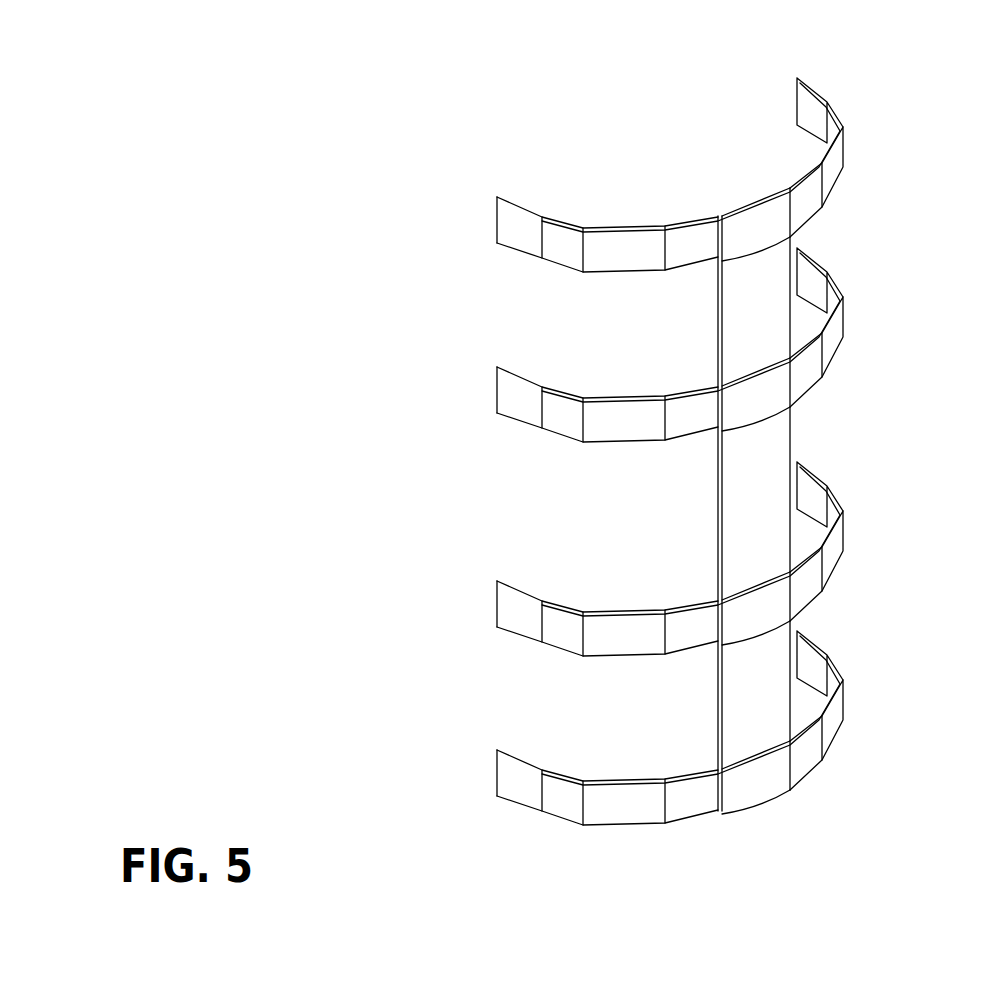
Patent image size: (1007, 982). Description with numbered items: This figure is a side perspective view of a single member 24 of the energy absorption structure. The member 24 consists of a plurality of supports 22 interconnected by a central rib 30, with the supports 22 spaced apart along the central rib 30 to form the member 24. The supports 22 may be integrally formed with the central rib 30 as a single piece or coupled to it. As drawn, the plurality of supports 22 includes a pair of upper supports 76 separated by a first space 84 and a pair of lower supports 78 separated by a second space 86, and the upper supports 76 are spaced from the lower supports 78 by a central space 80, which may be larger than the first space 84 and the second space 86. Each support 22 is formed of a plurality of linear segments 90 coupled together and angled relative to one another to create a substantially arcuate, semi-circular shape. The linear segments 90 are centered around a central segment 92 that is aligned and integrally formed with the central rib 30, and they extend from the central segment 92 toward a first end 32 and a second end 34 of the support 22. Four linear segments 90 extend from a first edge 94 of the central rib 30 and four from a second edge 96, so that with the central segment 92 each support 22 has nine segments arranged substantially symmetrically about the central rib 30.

The support 22 is at (565, 252).
The member 24 is at (503, 97).
The central rib 30 is at (768, 447).
The first end 32 is at (497, 212).
The second end 34 is at (796, 77).
The upper support 76 is at (840, 212).
The lower support 78 is at (850, 638).
The central space 80 is at (525, 548).
The first space 84 is at (546, 328).
The second space 86 is at (518, 710).
The linear segment 90 is at (833, 167).
The central segment 92 is at (750, 218).
The first edge 94 is at (712, 243).
The second edge 96 is at (790, 212).